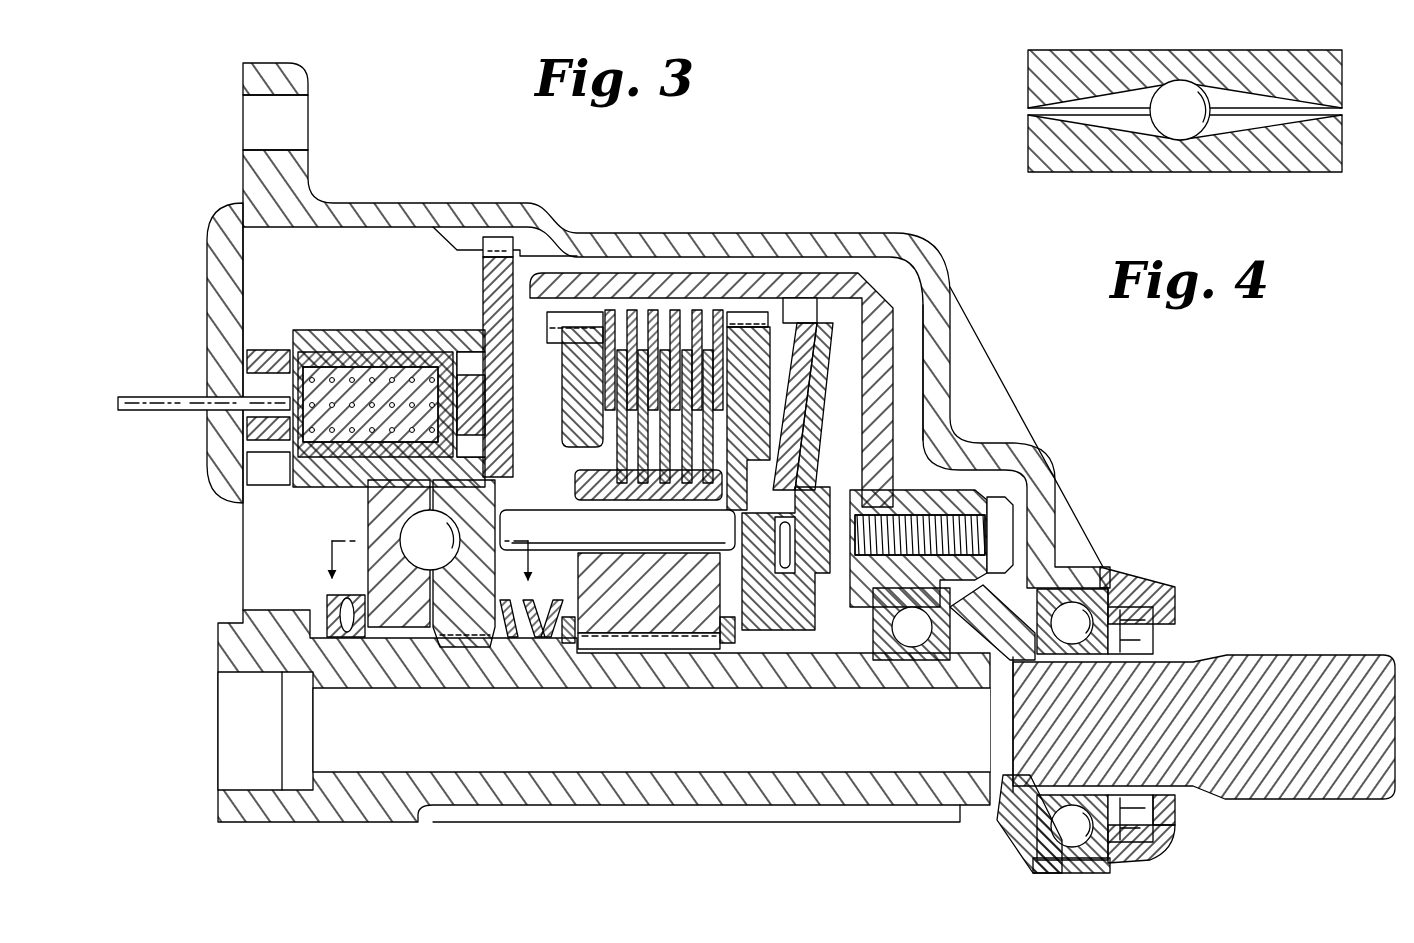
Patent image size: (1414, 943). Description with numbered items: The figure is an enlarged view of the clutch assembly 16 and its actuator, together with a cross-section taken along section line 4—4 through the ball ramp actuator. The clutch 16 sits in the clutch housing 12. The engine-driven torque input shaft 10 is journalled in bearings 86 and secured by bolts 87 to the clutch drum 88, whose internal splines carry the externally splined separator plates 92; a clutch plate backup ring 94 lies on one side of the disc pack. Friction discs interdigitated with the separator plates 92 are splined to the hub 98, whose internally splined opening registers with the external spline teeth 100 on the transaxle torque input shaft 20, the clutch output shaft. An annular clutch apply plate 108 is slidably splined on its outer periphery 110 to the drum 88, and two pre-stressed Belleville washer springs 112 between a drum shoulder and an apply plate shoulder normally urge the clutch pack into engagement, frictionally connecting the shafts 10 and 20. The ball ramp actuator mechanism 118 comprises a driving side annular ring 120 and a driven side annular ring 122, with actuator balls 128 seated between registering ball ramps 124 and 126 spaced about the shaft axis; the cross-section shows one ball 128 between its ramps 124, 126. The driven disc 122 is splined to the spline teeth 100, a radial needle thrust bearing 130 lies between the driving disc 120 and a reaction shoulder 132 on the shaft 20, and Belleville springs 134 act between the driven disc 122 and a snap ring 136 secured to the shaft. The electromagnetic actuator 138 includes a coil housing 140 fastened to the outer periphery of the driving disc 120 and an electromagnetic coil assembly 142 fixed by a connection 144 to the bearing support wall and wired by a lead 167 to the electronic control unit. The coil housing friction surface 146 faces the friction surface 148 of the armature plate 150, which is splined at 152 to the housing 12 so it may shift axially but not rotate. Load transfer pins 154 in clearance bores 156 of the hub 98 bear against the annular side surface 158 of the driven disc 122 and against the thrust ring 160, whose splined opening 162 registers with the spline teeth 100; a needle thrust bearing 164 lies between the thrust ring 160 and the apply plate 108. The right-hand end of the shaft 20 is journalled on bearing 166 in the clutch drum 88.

In FIG. 3, the torque input shaft 10 is at (1318, 660).
In FIG. 3, the clutch housing 12 is at (937, 308).
In FIG. 3, the clutch assembly 16 is at (656, 298).
In FIG. 3, the transaxle torque input shaft 20 is at (770, 677).
In FIG. 3, the bearings 86 is at (1095, 680).
In FIG. 3, the bolts 87 is at (1003, 507).
In FIG. 3, the clutch drum 88 is at (913, 440).
In FIG. 3, the clutch friction disc separator plates 92 is at (725, 273).
In FIG. 3, the clutch plate backup ring 94 is at (605, 305).
In FIG. 3, the hub 98 is at (648, 573).
In FIG. 3, the external spline teeth 100 is at (547, 647).
In FIG. 3, the clutch apply plate 108 is at (757, 383).
In FIG. 3, the outer periphery 110 is at (752, 318).
In FIG. 3, the Belleville washer springs 112 is at (863, 372).
In FIG. 3, the ball ramp actuator mechanism 118 is at (363, 557).
In FIG. 4, the ball ramp actuator mechanism 118 is at (1085, 175).
In FIG. 3, the driving side member 120 is at (387, 625).
In FIG. 4, the driving side member 120 is at (1305, 82).
In FIG. 3, the driven side member 122 is at (445, 625).
In FIG. 4, the driven side member 122 is at (1300, 150).
In FIG. 4, the ball ramp 124 is at (1240, 90).
In FIG. 4, the ball ramp 126 is at (1117, 128).
In FIG. 3, the actuator balls 128 is at (412, 535).
In FIG. 4, the actuator balls 128 is at (1180, 125).
In FIG. 3, the radial needle thrust bearing 130 is at (325, 620).
In FIG. 3, the reaction shoulder 132 is at (305, 615).
In FIG. 3, the Belleville springs 134 is at (572, 597).
In FIG. 3, the snap ring 136 is at (578, 622).
In FIG. 3, the electromagnetic actuator 138 is at (381, 326).
In FIG. 3, the coil housing 140 is at (340, 490).
In FIG. 3, the electromagnetic coil assembly 142 is at (252, 345).
In FIG. 3, the connection 144 is at (245, 388).
In FIG. 3, the electromagnetic clutch friction surface 146 is at (482, 342).
In FIG. 3, the friction surface 148 is at (483, 296).
In FIG. 3, the clutch actuator armature plate 150 is at (548, 270).
In FIG. 3, the spline 152 is at (493, 238).
In FIG. 3, the load transfer pins 154 is at (570, 518).
In FIG. 3, the clearance bores 156 is at (598, 515).
In FIG. 3, the annular side surface 158 is at (497, 510).
In FIG. 3, the load transfer ring 160 is at (750, 596).
In FIG. 3, the internally splined central opening 162 is at (793, 643).
In FIG. 3, the anti-friction thrust bearing 164 is at (790, 535).
In FIG. 3, the bearing 166 is at (905, 627).
In FIG. 3, the lead 167 is at (172, 415).
In FIG. 3, the section line 4 is at (427, 547).